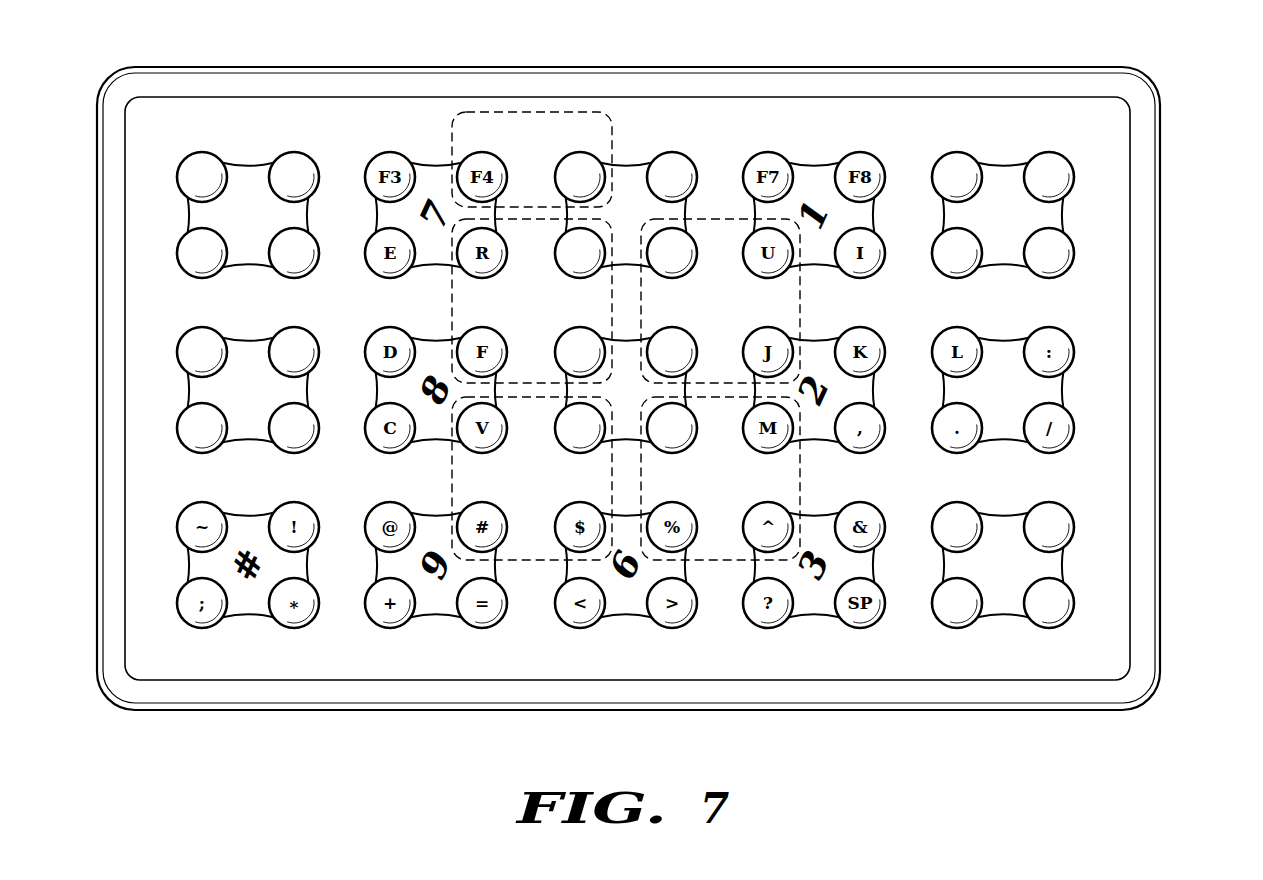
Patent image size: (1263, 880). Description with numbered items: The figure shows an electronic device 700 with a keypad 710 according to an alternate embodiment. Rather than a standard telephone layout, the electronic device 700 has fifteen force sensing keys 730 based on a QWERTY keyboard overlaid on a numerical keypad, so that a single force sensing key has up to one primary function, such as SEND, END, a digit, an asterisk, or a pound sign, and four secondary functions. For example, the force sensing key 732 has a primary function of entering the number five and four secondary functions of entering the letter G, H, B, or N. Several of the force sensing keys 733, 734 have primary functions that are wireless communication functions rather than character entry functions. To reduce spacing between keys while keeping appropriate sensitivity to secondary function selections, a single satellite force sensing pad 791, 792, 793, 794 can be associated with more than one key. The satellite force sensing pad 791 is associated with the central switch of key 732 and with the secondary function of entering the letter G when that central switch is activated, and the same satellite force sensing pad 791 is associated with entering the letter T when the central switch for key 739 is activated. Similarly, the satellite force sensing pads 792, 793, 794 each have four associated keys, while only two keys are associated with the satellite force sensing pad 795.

The electronic device 700 is at (842, 26).
The keypad 710 is at (373, 665).
The force sensing keys 730 is at (247, 177).
The force sensing key 732 is at (623, 353).
The force sensing key 733 is at (1052, 212).
The force sensing key 734 is at (1050, 566).
The key 739 is at (623, 175).
The satellite force sensing pad 791 is at (506, 313).
The satellite force sensing pad 792 is at (734, 313).
The satellite force sensing pad 793 is at (506, 493).
The satellite force sensing pad 794 is at (696, 493).
The satellite force sensing pad 795 is at (508, 148).